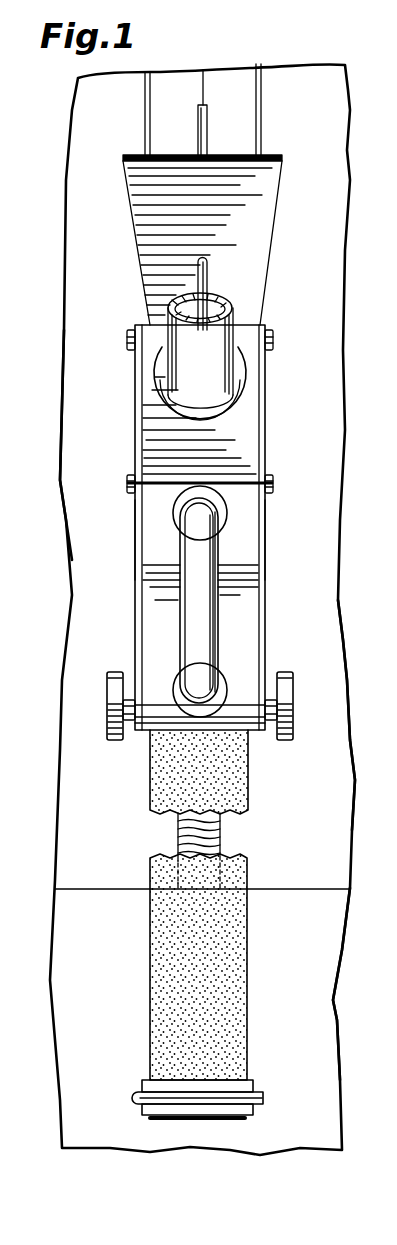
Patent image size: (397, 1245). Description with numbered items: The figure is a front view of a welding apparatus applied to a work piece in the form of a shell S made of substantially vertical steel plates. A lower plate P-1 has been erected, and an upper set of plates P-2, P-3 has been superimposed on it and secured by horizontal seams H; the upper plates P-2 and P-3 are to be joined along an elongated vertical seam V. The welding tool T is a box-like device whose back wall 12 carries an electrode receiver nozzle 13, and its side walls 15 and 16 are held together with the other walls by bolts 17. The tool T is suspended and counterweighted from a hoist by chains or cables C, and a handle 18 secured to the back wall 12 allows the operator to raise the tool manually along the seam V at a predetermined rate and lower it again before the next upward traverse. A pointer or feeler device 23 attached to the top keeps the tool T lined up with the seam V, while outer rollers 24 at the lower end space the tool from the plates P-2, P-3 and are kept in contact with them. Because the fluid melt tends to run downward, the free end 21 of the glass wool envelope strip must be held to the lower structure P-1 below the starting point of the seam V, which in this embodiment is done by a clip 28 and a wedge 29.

The shell S is at (56, 793).
The lower plate P-1 is at (326, 1010).
The upper plate P-2 is at (72, 596).
The upper plate P-3 is at (340, 756).
The horizontal seam H is at (286, 889).
The chain or cable C is at (145, 100).
The vertical seam V is at (205, 93).
The pointer or feeler device 23 is at (208, 133).
The welding tool T is at (276, 281).
The electrode rod E is at (208, 268).
The electrode receiver nozzle 13 is at (232, 318).
The back wall 12 is at (246, 430).
The side wall 15 is at (135, 545).
The side wall 16 is at (265, 541).
The bolt 17 is at (273, 485).
The handle 18 is at (218, 606).
The outer roller 24 is at (107, 690).
The free end of strip 21 is at (235, 1040).
The wedge 29 is at (232, 1080).
The clip 28 is at (214, 1098).